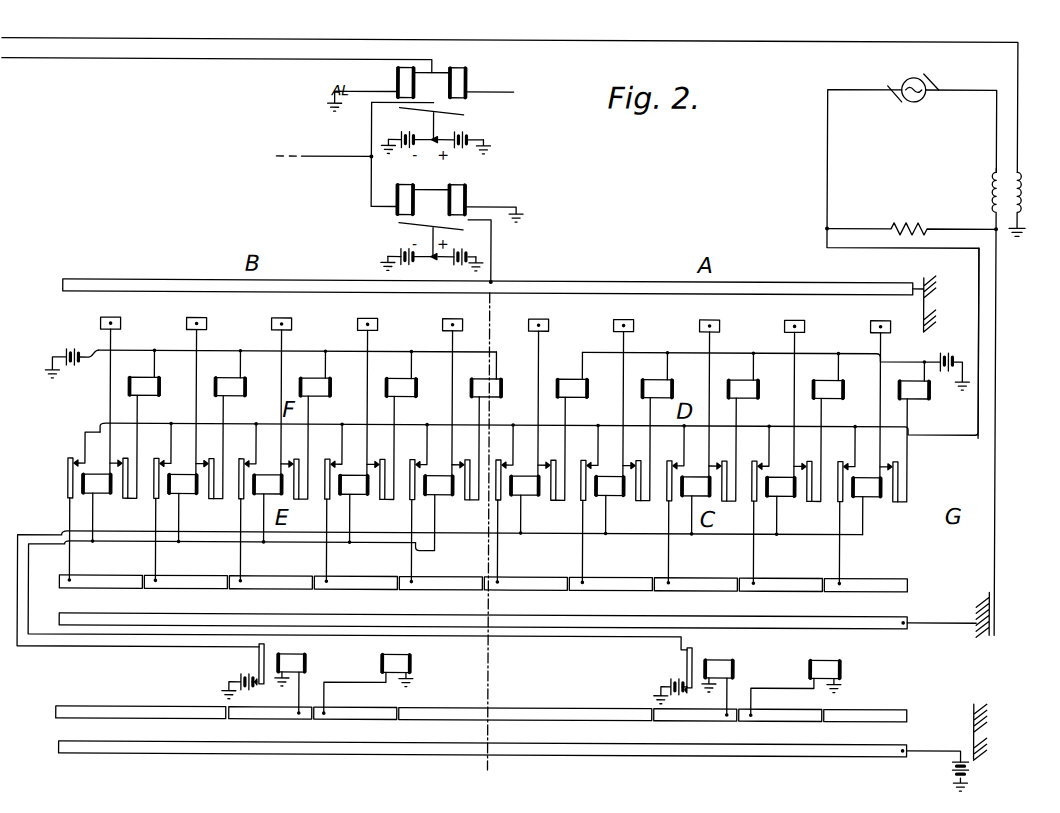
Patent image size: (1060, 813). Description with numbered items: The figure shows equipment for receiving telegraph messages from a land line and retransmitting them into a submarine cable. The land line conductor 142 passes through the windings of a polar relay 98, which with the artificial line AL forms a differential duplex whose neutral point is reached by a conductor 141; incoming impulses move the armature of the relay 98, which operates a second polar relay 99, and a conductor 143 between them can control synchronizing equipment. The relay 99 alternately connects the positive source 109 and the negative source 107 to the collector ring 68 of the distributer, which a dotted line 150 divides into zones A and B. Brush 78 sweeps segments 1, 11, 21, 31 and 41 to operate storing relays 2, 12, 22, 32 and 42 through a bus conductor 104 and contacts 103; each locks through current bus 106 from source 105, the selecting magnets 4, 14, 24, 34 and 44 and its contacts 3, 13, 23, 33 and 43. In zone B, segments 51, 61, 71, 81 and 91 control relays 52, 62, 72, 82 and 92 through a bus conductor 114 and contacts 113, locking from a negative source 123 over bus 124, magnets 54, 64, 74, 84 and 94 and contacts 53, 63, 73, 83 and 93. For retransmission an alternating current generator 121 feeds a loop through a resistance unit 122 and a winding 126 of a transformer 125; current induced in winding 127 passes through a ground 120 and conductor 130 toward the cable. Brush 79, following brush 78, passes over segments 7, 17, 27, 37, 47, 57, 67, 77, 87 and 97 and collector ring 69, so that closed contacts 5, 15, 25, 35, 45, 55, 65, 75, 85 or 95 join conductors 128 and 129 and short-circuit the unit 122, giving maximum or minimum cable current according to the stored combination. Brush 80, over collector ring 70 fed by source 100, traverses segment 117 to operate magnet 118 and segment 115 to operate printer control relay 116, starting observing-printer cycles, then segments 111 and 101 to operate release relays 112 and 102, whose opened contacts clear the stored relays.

The segment 1 is at (882, 319).
The storing relay 2 is at (867, 506).
The relay contacts 3 is at (896, 464).
The selecting magnet 4 is at (914, 431).
The relay contacts 5 is at (847, 460).
The segment 7 is at (876, 583).
The segment 11 is at (797, 388).
The storing relay 12 is at (781, 506).
The relay contacts 13 is at (805, 472).
The selecting magnet 14 is at (828, 427).
The relay contacts 15 is at (761, 460).
The segment 17 is at (791, 583).
The segment 21 is at (712, 388).
The storing relay 22 is at (696, 506).
The relay contacts 23 is at (720, 472).
The selecting magnet 24 is at (743, 426).
The relay contacts 25 is at (676, 460).
The segment 27 is at (706, 583).
The segment 31 is at (626, 388).
The storing relay 32 is at (610, 505).
The relay contacts 33 is at (634, 472).
The selecting magnet 34 is at (657, 426).
The relay contacts 35 is at (590, 460).
The segment 37 is at (621, 583).
The segment 41 is at (541, 387).
The storing relay 42 is at (525, 505).
The relay contacts 43 is at (549, 471).
The selecting magnet 44 is at (572, 426).
The relay contacts 45 is at (505, 460).
The segment 47 is at (536, 583).
The segment 51 is at (455, 387).
The storing relay 52 is at (435, 513).
The relay contacts 53 is at (463, 471).
The selecting magnet 54 is at (486, 426).
The relay contacts 55 is at (419, 460).
The segment 57 is at (451, 583).
The segment 61 is at (370, 386).
The storing relay 62 is at (354, 509).
The relay contacts 63 is at (378, 470).
The selecting magnet 64 is at (401, 425).
The relay contacts 65 is at (334, 460).
The segment 67 is at (366, 583).
The segment 71 is at (284, 386).
The storing relay 72 is at (268, 509).
The relay contacts 73 is at (292, 470).
The selecting magnet 74 is at (315, 424).
The relay contacts 75 is at (248, 460).
The segment 77 is at (281, 583).
The segment 81 is at (199, 386).
The storing relay 82 is at (183, 508).
The relay contacts 83 is at (207, 470).
The selecting magnet 84 is at (230, 424).
The relay contacts 85 is at (163, 460).
The segment 87 is at (196, 583).
The segment 91 is at (113, 385).
The storing relay 92 is at (97, 508).
The relay contacts 93 is at (121, 469).
The selecting magnet 94 is at (144, 423).
The relay contacts 95 is at (77, 460).
The segment 97 is at (111, 583).
The collector ring 68 is at (560, 278).
The collector ring 69 is at (568, 616).
The collector ring 70 is at (508, 747).
The contactor brush 78 is at (930, 298).
The contactor brush 79 is at (995, 605).
The contactor brush 80 is at (990, 733).
The polar relay 98 is at (432, 83).
The second polar relay 99 is at (459, 204).
The source of current 100 is at (975, 773).
The segment 101 is at (285, 713).
The lock release relay 102 is at (294, 660).
The relay contacts 103 is at (257, 658).
The bus conductor 104 is at (44, 527).
The positively poled source 105 is at (944, 358).
The current bus 106 is at (752, 348).
The negatively poled source 107 is at (395, 250).
The positively poled source 109 is at (472, 250).
The segment 111 is at (706, 713).
The lock release relay 112 is at (726, 656).
The relay contacts 113 is at (684, 658).
The bus conductor 114 is at (203, 549).
The segment 115 is at (370, 713).
The printer control relay 116 is at (404, 654).
The segment 117 is at (799, 713).
The magnet 118 is at (826, 660).
The ground 120 is at (1017, 243).
The alternating current generator 121 is at (918, 98).
The resistance unit 122 is at (912, 216).
The source of grounded negative current 123 is at (68, 350).
The bus conductor 124 is at (394, 352).
The transformer 125 is at (999, 166).
The transformer winding 126 is at (988, 188).
The transformer winding 127 is at (1018, 174).
The conductor 128 is at (978, 268).
The conductor 129 is at (989, 440).
The conductor 130 is at (94, 40).
The conductor 141 is at (91, 62).
The land line conductor 142 is at (492, 92).
The conductor 143 is at (334, 154).
The dotted line 150 is at (491, 686).